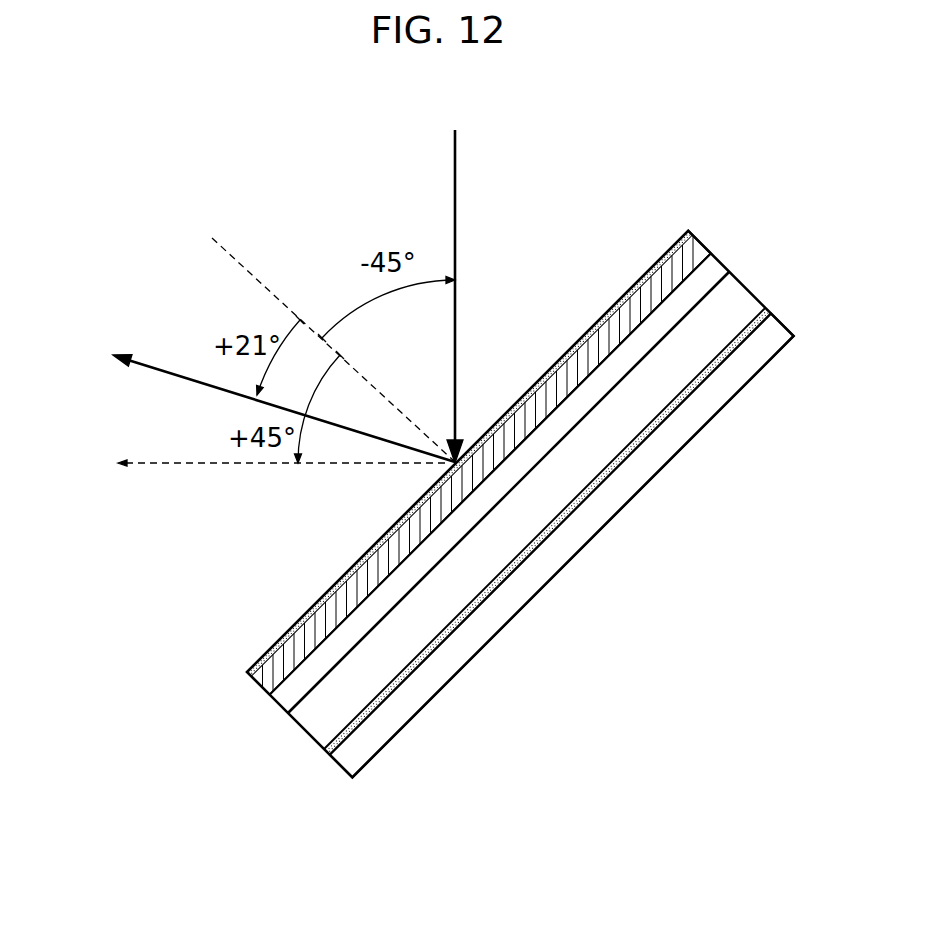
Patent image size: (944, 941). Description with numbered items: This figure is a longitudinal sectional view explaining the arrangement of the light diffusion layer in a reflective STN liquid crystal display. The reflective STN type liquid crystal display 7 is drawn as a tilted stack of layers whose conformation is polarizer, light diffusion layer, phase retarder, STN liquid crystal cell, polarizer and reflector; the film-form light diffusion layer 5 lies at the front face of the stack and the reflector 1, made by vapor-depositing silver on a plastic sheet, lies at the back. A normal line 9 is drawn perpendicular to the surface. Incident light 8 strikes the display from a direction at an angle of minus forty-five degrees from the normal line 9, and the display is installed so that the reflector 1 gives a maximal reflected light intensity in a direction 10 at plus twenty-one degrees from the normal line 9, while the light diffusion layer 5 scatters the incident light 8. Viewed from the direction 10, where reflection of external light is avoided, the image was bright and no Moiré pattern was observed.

The reflector 1 is at (753, 360).
The light diffusion layer 5 is at (701, 238).
The reflective STN type liquid crystal display 7 is at (537, 490).
The incident light 8 is at (455, 278).
The normal line 9 is at (318, 343).
The direction 10 is at (260, 403).